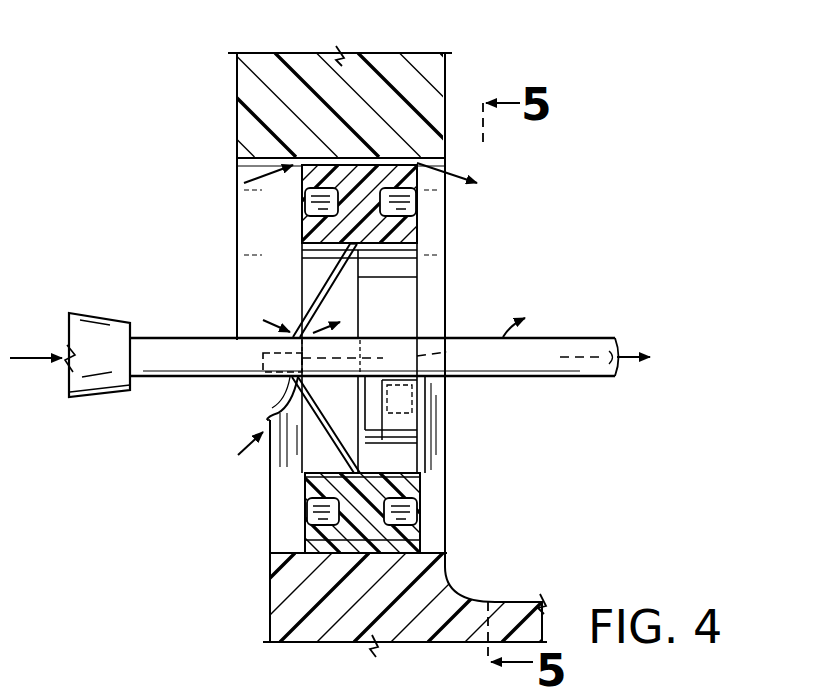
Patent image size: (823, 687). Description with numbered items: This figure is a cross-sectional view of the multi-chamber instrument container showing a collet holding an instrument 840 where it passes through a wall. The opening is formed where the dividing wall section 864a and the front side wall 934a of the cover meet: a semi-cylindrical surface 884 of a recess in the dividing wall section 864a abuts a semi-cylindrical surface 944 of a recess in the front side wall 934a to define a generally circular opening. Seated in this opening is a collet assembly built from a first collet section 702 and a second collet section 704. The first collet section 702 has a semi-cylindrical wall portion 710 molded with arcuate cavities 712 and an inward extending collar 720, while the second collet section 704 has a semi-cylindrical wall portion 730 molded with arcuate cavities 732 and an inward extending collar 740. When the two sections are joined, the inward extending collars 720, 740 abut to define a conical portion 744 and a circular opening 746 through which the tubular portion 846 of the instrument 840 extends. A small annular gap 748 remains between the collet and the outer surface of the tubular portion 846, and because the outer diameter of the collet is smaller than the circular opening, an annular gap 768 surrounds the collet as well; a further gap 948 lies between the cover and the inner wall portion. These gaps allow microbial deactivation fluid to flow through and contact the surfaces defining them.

The annular gap 768 is at (352, 167).
The front side wall 934a is at (442, 80).
The semi-cylindrical surface 944 is at (237, 166).
The semi-cylindrical wall portion 730 is at (402, 177).
The arcuate cavities 732 is at (315, 208).
The second collet section 704 is at (425, 221).
The instrument 840 is at (92, 318).
The inward extending collar 740 is at (322, 278).
The conical portion 744 is at (303, 298).
The circular opening 746 is at (285, 343).
The tubular portion 846 is at (588, 337).
The annular gap 748 is at (243, 400).
The gap 948 is at (262, 418).
The first collet section 702 is at (425, 470).
The inward extending collar 720 is at (300, 437).
The arcuate cavities 712 is at (398, 517).
The semi-cylindrical wall portion 710 is at (398, 543).
The dividing wall section 864a is at (427, 580).
The semi-cylindrical surface 884 is at (320, 555).